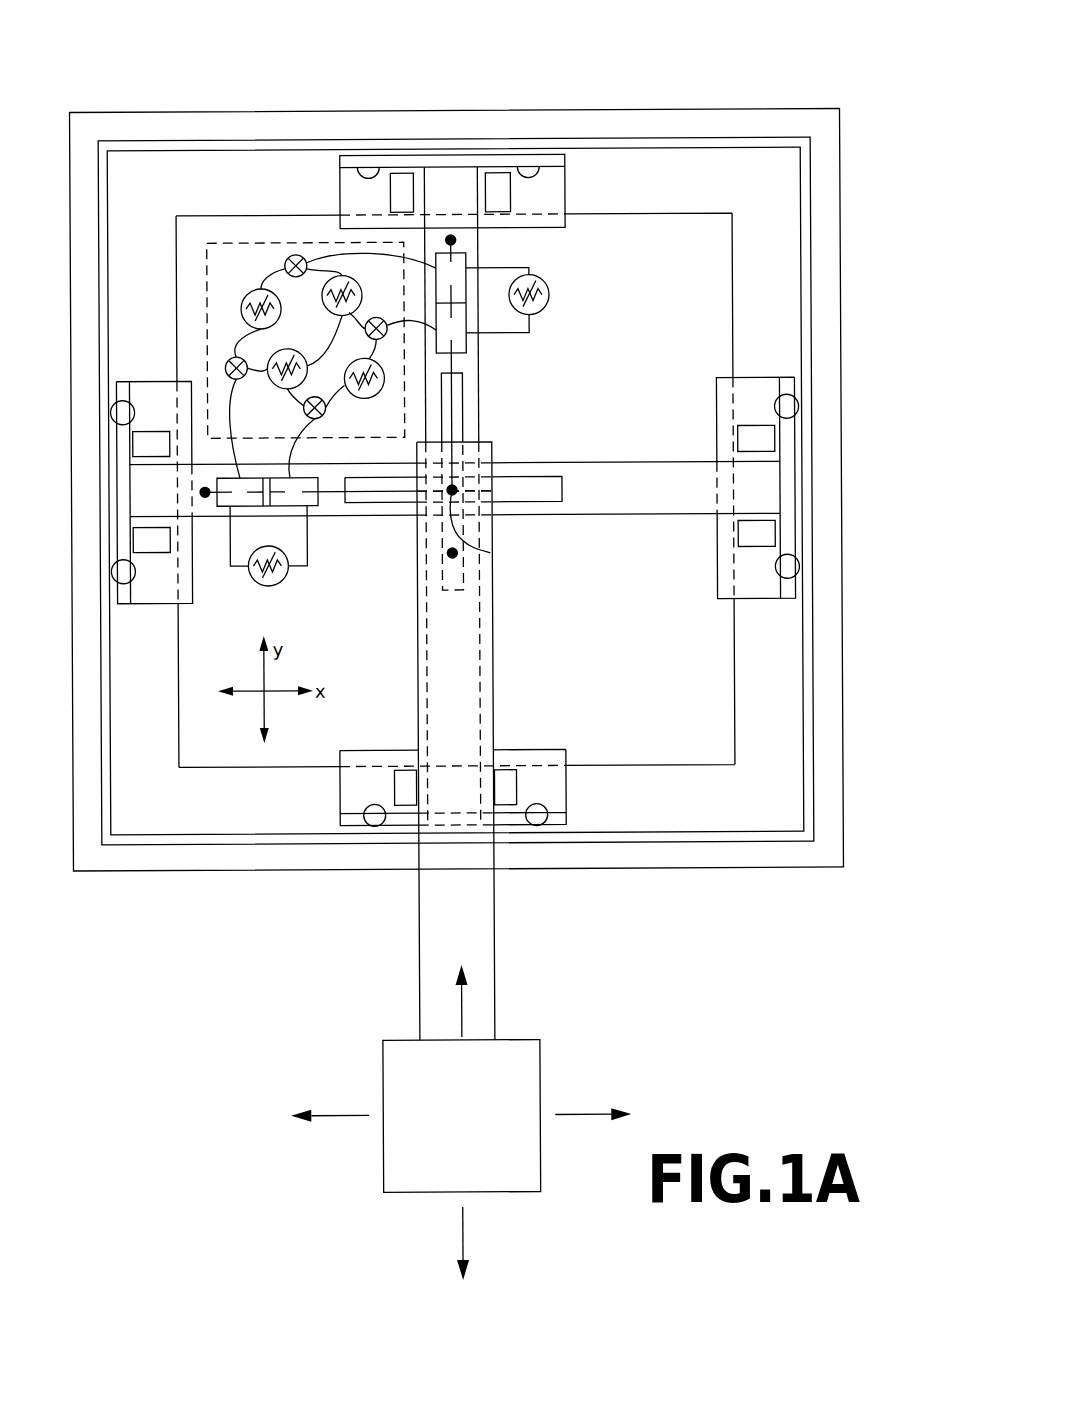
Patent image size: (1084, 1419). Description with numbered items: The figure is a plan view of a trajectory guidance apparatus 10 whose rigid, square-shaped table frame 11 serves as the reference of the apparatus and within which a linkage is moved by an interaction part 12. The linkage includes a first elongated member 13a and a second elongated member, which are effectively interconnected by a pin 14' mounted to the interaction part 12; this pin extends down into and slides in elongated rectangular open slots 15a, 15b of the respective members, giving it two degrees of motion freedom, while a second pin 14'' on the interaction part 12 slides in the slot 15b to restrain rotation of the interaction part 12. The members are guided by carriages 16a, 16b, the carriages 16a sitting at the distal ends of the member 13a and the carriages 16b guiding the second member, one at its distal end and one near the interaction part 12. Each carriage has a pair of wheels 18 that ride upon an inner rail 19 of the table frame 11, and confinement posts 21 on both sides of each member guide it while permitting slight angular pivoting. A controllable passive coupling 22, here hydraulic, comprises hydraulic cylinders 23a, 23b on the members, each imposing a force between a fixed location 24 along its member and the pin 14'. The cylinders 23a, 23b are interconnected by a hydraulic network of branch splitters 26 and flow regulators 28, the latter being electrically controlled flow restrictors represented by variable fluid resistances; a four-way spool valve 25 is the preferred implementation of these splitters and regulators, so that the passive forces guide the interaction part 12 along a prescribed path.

The trajectory guidance apparatus 10 is at (830, 84).
The table frame 11 is at (823, 277).
The interaction part 12 is at (476, 1129).
The first elongated member 13a is at (633, 500).
The pin 14' is at (506, 479).
The pin 14'' is at (407, 604).
The elongated rectangular open slot 15a is at (547, 475).
The elongated rectangular open slot 15b is at (450, 592).
The carriage 16a is at (160, 603).
The carriage 16b is at (550, 193).
The wheels 18 is at (790, 410).
The inner rail 19 is at (808, 735).
The confinement posts 21 is at (757, 442).
The controllable passive coupling 22 is at (298, 198).
The hydraulic cylinder 23a is at (318, 502).
The hydraulic cylinder 23b is at (463, 353).
The fixed location 24 is at (452, 240).
The 4-way spool valve 25 is at (257, 242).
The branch splitters 26 is at (226, 367).
The flow regulators 28 is at (390, 394).